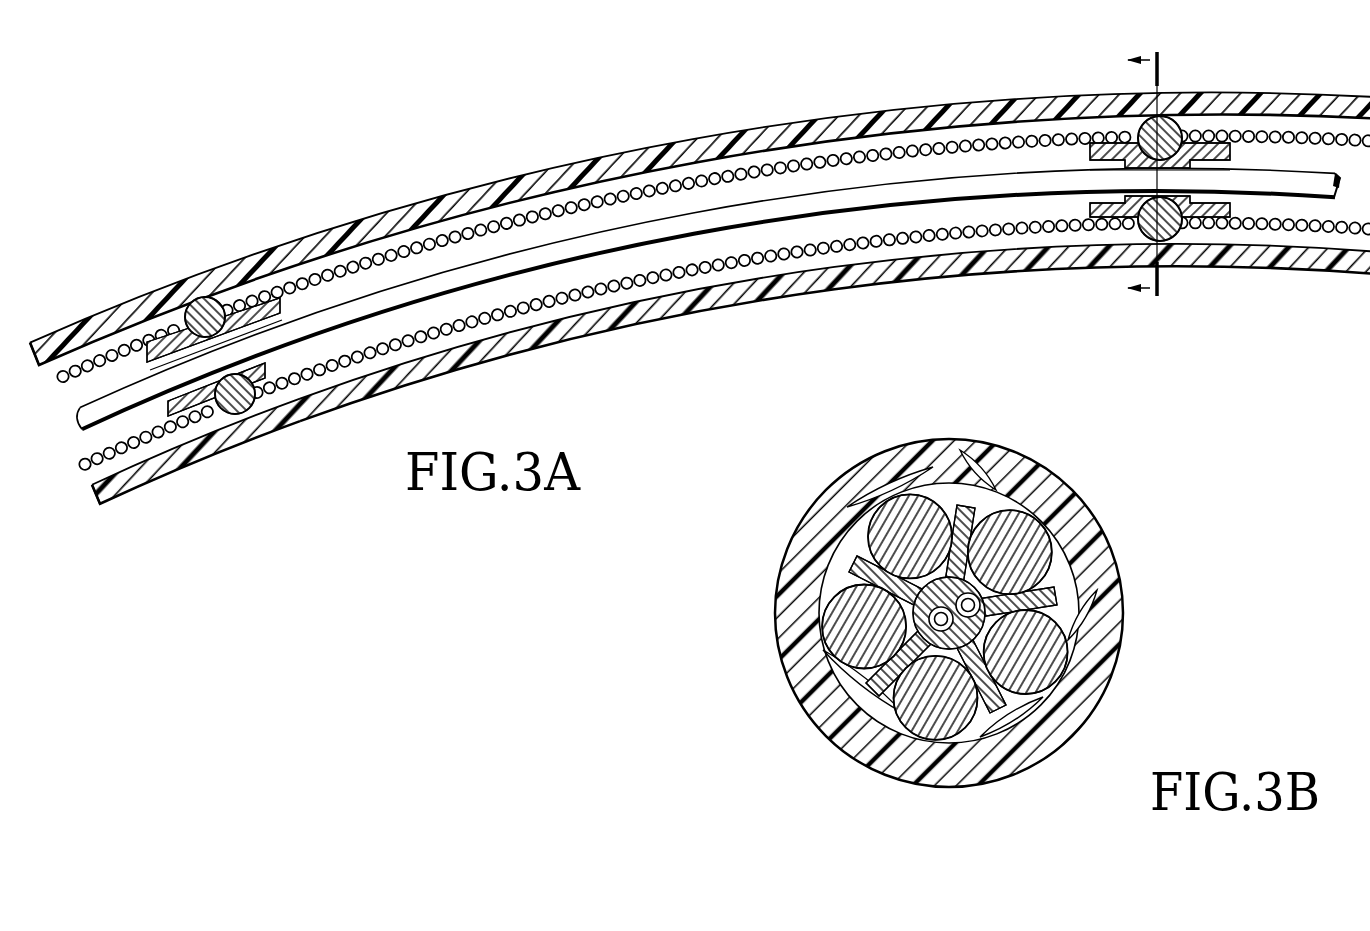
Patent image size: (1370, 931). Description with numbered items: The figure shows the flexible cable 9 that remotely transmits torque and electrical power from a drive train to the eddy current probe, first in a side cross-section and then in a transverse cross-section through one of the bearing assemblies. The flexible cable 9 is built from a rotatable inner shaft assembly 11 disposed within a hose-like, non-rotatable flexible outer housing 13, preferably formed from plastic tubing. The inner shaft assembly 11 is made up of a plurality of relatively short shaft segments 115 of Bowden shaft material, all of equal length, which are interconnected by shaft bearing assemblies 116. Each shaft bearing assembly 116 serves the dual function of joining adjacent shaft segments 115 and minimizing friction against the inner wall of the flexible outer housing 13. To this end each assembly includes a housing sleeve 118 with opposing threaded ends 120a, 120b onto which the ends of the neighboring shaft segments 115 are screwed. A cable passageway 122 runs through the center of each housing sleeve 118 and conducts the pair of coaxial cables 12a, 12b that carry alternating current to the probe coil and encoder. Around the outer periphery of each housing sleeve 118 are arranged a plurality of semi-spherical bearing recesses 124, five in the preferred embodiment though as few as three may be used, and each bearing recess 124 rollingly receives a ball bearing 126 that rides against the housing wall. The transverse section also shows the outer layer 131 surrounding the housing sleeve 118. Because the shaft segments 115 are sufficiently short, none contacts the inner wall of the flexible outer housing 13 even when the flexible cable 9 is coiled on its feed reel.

In FIG. 3A, the flexible cable 9 is at (235, 212).
In FIG. 3B, the flexible cable 9 is at (853, 452).
In FIG. 3A, the inner shaft assembly 11 is at (305, 238).
In FIG. 3A, the coaxial cable 12a is at (381, 314).
In FIG. 3A, the coaxial cable 12b is at (367, 296).
In FIG. 3A, the flexible outer housing 13 is at (55, 332).
In FIG. 3A, the shaft segments 115 is at (413, 243).
In FIG. 3A, the shaft bearing assemblies 116 is at (172, 316).
In FIG. 3B, the shaft bearing assemblies 116 is at (853, 553).
In FIG. 3A, the housing sleeve 118 is at (270, 405).
In FIG. 3B, the housing sleeve 118 is at (965, 512).
In FIG. 3A, the threaded end 120a is at (340, 408).
In FIG. 3A, the threaded end 120b is at (187, 465).
In FIG. 3A, the cable passageway 122 is at (150, 363).
In FIG. 3B, the cable passageway 122 is at (822, 595).
In FIG. 3A, the semi-spherical bearing recesses 124 is at (228, 298).
In FIG. 3B, the semi-spherical bearing recesses 124 is at (869, 767).
In FIG. 3A, the ball bearing 126 is at (187, 296).
In FIG. 3B, the ball bearing 126 is at (935, 705).
In FIG. 3B, the outer jacket 131 is at (1075, 515).